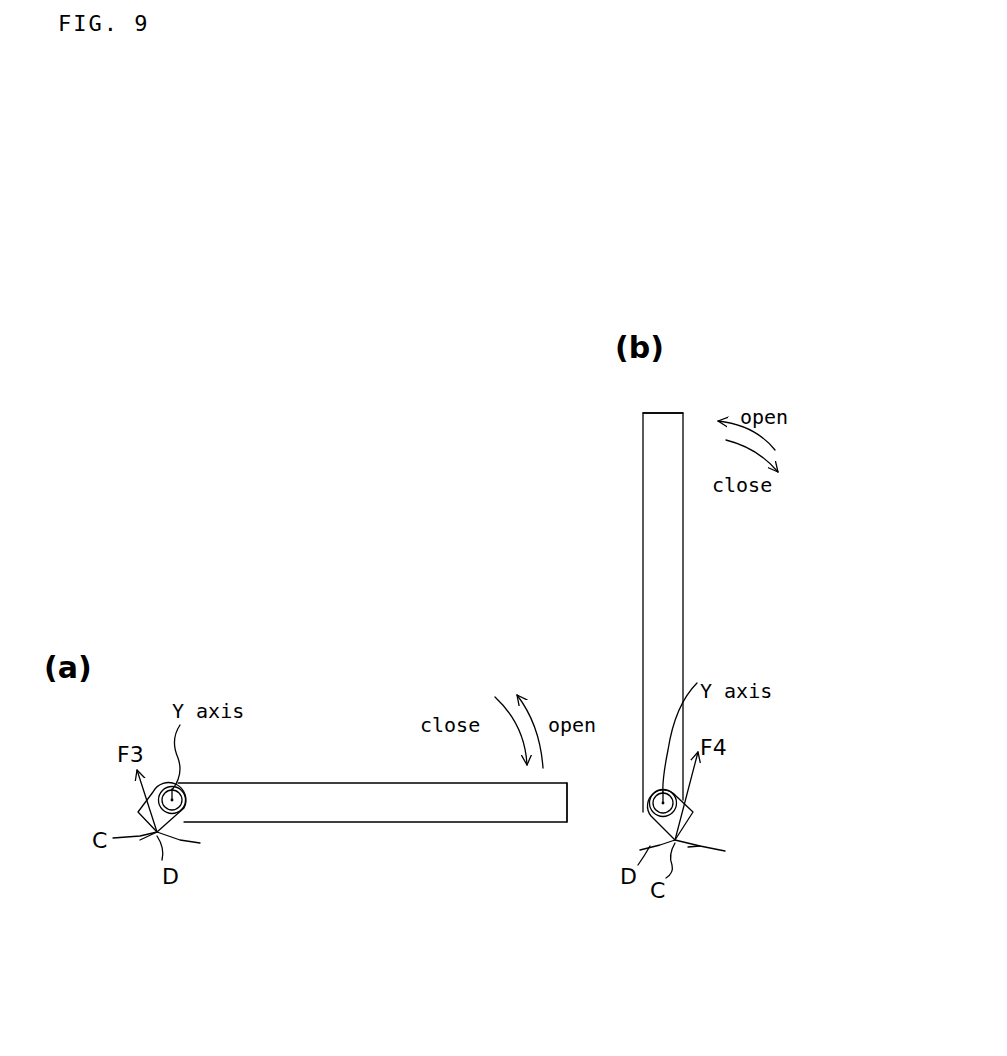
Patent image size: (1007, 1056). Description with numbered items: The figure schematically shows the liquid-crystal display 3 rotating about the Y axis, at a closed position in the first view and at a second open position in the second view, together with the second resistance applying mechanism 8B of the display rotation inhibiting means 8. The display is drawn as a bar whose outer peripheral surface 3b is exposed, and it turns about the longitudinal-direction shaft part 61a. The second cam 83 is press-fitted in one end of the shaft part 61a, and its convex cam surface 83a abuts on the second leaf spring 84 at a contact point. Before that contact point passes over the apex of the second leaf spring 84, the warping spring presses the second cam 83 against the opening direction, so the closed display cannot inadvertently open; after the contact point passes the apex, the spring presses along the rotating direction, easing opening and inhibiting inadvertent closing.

In FIG. 9A, the liquid-crystal display 3 is at (450, 812).
In FIG. 9B, the liquid-crystal display 3 is at (672, 541).
In FIG. 9A, the outer peripheral surface 3b is at (569, 805).
In FIG. 9B, the outer peripheral surface 3b is at (661, 413).
In FIG. 9A, the longitudinal-direction shaft part 61a is at (178, 790).
In FIG. 9B, the longitudinal-direction shaft part 61a is at (655, 793).
In FIG. 9A, the second cam 83 is at (138, 812).
In FIG. 9B, the second cam 83 is at (693, 815).
In FIG. 9A, the cam surface 83a is at (135, 818).
In FIG. 9B, the cam surface 83a is at (725, 852).
In FIG. 9A, the second leaf spring 84 is at (182, 866).
In FIG. 9B, the second leaf spring 84 is at (695, 848).
In FIG. 9A, the second resistance applying mechanism 8B is at (172, 816).
In FIG. 9B, the second resistance applying mechanism 8B is at (716, 826).
In FIG. 9A, the display rotation inhibiting means 8 is at (172, 816).
In FIG. 9B, the display rotation inhibiting means 8 is at (716, 826).